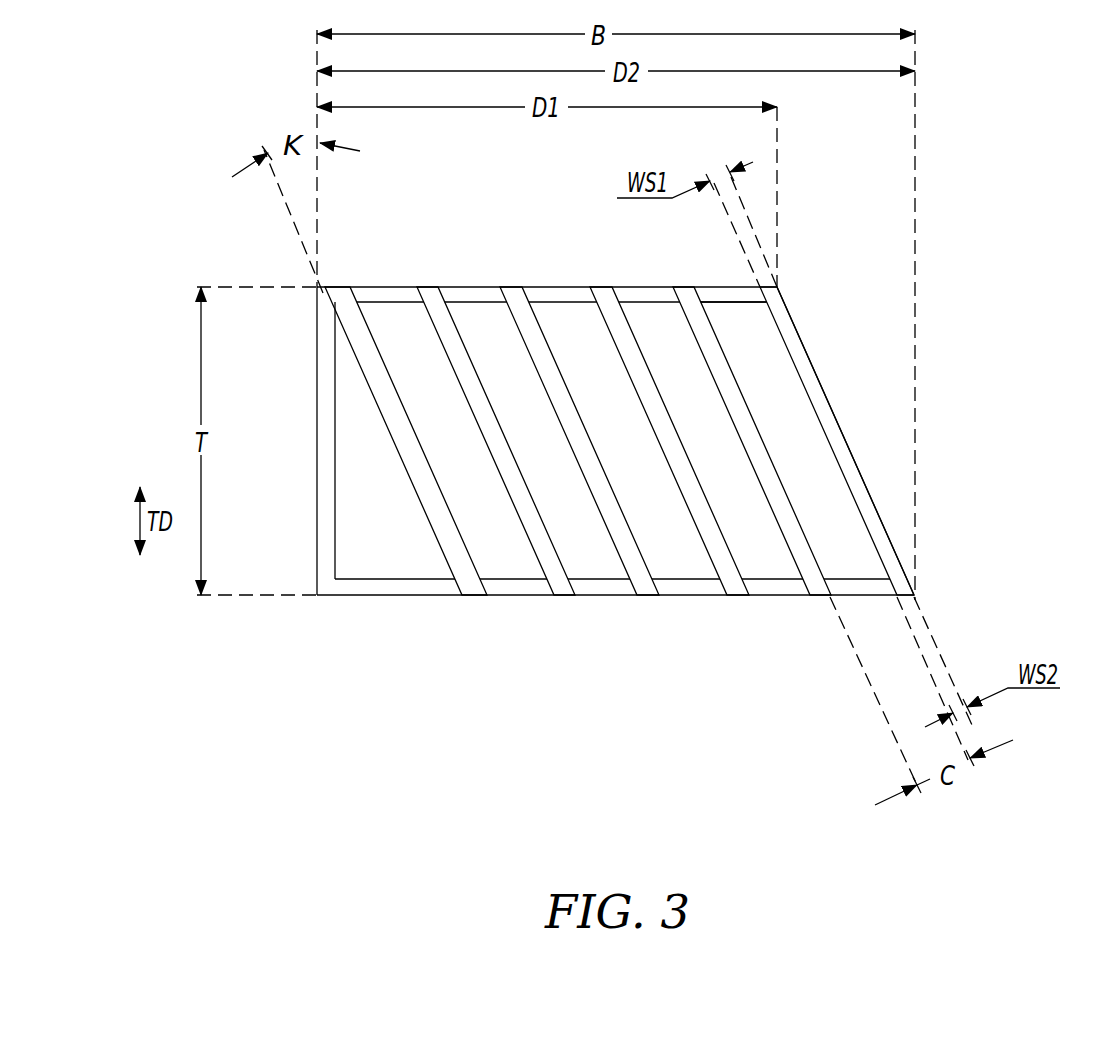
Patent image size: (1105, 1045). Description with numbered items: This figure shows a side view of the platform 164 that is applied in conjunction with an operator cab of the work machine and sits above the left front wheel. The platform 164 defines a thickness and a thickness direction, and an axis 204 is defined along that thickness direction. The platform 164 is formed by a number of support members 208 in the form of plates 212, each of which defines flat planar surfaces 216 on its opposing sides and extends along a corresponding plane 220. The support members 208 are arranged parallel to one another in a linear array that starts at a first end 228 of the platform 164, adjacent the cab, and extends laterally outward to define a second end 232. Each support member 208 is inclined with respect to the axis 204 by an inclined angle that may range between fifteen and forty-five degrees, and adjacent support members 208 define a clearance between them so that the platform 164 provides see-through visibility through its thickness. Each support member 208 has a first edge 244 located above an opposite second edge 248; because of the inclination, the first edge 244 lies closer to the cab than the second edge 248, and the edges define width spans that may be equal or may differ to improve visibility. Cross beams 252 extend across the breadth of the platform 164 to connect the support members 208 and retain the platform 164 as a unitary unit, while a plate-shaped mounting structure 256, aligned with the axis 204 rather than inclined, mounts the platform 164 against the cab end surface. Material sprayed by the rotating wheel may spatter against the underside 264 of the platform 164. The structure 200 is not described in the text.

The platform 164 is at (191, 170).
The ribbed structure 200 is at (556, 285).
The axis 204 is at (318, 207).
The support members 208 is at (450, 510).
The plates 212 is at (537, 330).
The planar surfaces 216 is at (955, 562).
The plane 220 is at (833, 408).
The first end 228 is at (314, 376).
The second end 232 is at (850, 435).
The first edge 244 is at (763, 287).
The second edge 248 is at (912, 597).
The cross beams 252 is at (373, 287).
The mounting structure 256 is at (335, 533).
The underside 264 is at (508, 598).